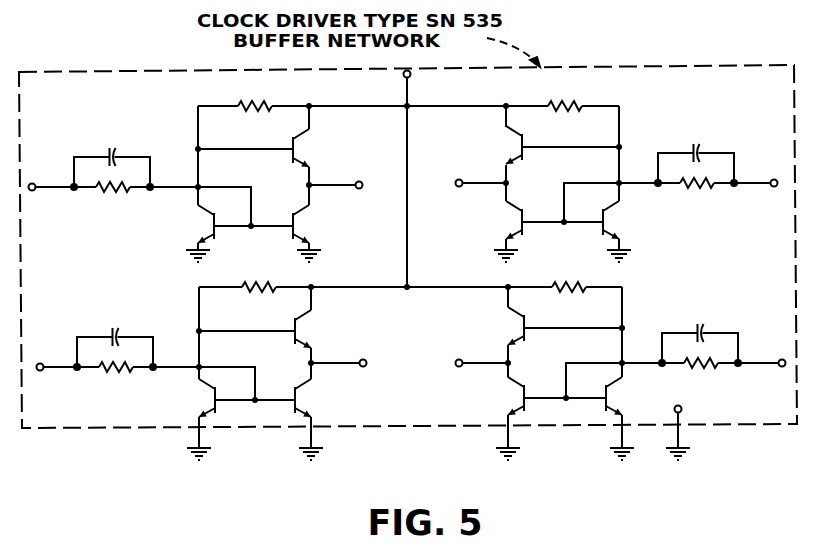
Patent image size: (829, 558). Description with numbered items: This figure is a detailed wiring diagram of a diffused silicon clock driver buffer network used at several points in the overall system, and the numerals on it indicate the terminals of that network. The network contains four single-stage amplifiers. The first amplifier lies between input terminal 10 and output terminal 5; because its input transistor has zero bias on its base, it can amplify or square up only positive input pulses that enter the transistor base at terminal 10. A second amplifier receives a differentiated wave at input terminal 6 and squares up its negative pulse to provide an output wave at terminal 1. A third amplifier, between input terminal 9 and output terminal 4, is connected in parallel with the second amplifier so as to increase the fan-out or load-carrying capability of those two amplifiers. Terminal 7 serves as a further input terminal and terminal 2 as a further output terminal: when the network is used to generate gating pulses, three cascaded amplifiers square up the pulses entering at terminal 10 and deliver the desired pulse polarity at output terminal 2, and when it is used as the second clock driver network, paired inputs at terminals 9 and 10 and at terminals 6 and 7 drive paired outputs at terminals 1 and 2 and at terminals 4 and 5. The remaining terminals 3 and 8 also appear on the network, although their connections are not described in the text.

The output terminal 1 is at (362, 182).
The output terminal 2 is at (456, 180).
The supply voltage terminal 3 is at (410, 77).
The output terminal 4 is at (366, 361).
The output terminal 5 is at (456, 360).
The input terminal 6 is at (35, 184).
The input terminal 7 is at (771, 180).
The ground terminal 8 is at (682, 409).
The input terminal 9 is at (43, 364).
The input terminal 10 is at (779, 359).